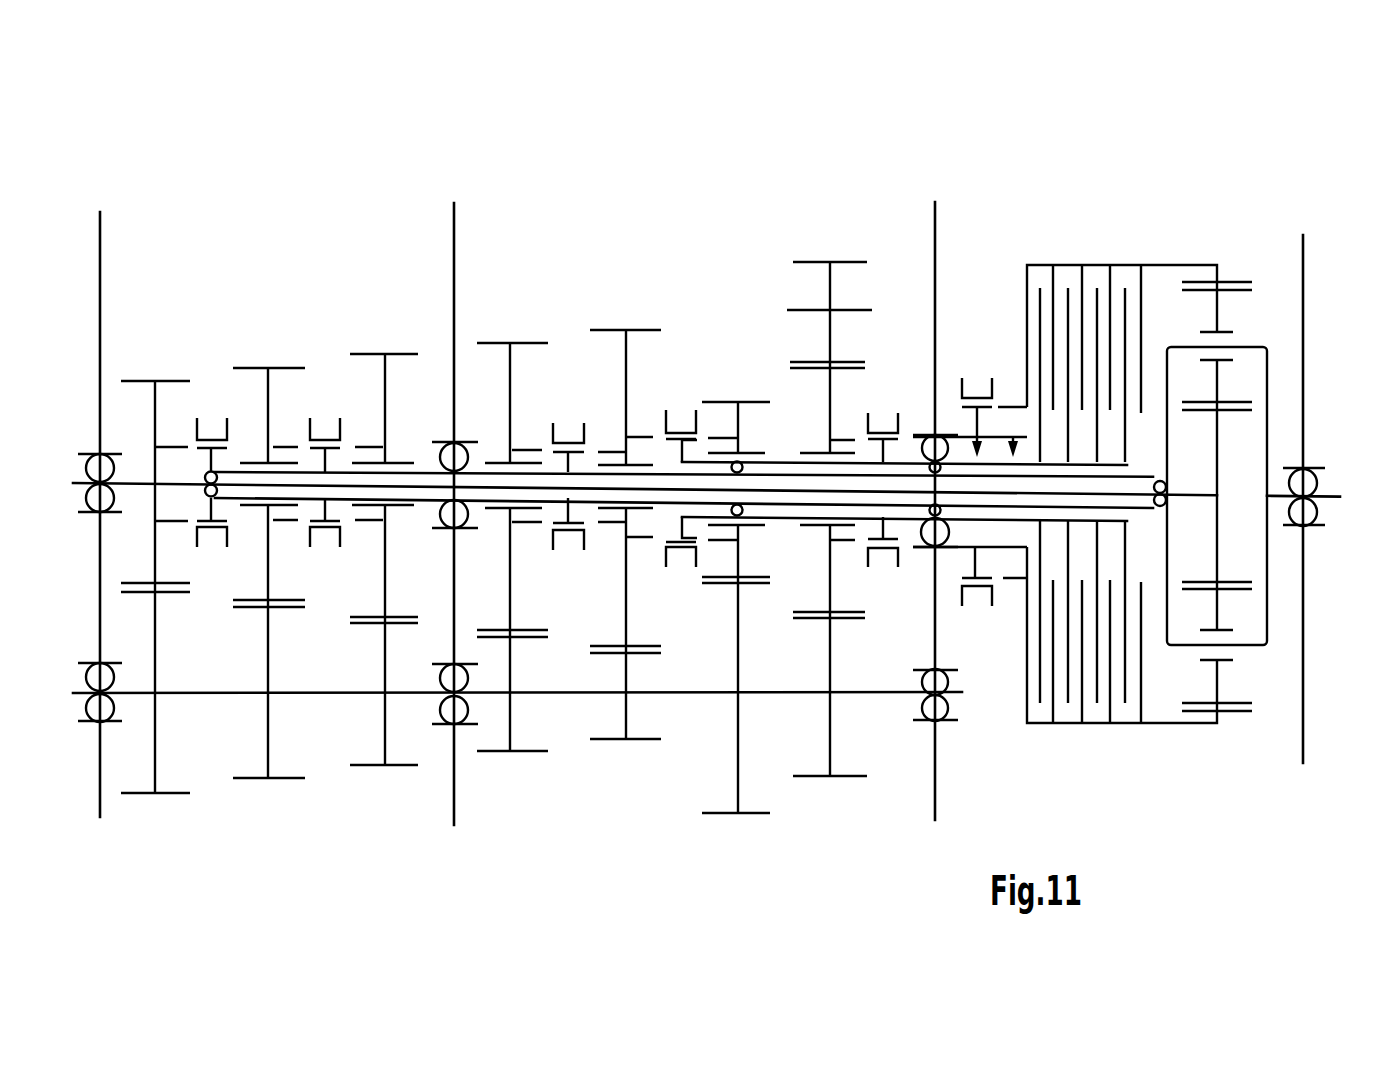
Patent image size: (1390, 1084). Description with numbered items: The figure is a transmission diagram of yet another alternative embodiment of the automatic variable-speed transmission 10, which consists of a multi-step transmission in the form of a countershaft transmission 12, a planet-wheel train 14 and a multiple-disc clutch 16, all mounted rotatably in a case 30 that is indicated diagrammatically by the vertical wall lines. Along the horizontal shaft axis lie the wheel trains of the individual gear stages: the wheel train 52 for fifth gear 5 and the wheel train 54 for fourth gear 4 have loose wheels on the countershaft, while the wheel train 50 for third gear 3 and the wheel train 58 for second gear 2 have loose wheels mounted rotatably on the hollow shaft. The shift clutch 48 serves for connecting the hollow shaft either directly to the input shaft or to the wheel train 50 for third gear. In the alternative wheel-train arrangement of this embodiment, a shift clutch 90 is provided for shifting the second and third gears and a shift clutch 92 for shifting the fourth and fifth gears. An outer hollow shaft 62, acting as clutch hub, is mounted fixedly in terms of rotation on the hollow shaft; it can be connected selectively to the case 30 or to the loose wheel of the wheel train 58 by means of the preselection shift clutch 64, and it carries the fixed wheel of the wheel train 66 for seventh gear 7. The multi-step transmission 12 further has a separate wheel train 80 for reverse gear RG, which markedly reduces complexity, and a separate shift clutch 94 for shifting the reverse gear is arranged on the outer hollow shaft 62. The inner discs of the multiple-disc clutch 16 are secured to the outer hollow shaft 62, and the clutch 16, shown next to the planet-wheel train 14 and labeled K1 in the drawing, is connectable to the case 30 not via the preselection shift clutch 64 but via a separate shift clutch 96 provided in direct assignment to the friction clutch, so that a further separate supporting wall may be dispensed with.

The variable-speed transmission 10 is at (1281, 158).
The countershaft transmission 12 is at (548, 155).
The planet-wheel train 14 is at (1222, 189).
The multiple-disc clutch 16 is at (1102, 202).
The case 30 is at (101, 258).
The shift clutch 48 is at (207, 548).
The wheel train for third gear 50 is at (496, 330).
The wheel train for fifth gear 52 is at (252, 340).
The wheel train for fourth gear 54 is at (370, 330).
The wheel train for second gear 58 is at (602, 312).
The outer hollow shaft 62 is at (788, 522).
The preselection shift clutch 64 is at (685, 575).
The wheel train for seventh gear 66 is at (726, 825).
The wheel train for reverse gear 80 is at (828, 792).
The shift clutch 90 is at (567, 556).
The shift clutch 92 is at (323, 548).
The shift clutch 94 is at (883, 568).
The shift clutch 96 is at (975, 612).
The fifth gear 5 is at (269, 401).
The fourth gear 4 is at (383, 401).
The third gear 3 is at (513, 402).
The second gear 2 is at (625, 410).
The seventh gear 7 is at (736, 414).
The reverse gear RG is at (827, 379).
The clutch K1 is at (970, 441).